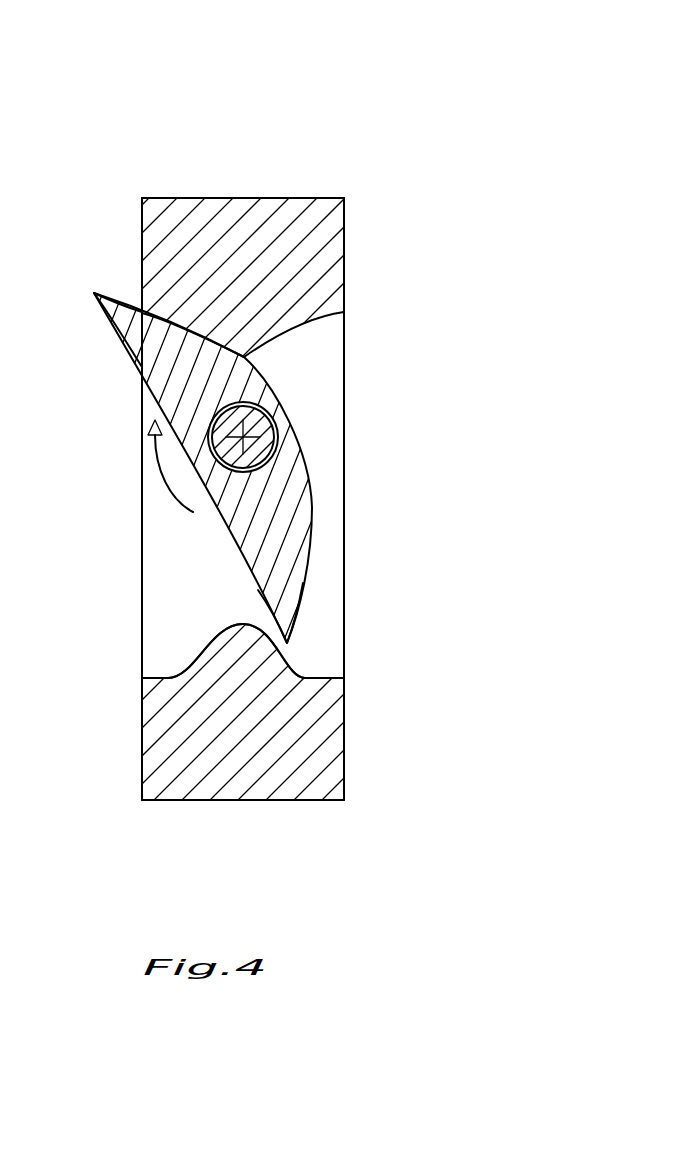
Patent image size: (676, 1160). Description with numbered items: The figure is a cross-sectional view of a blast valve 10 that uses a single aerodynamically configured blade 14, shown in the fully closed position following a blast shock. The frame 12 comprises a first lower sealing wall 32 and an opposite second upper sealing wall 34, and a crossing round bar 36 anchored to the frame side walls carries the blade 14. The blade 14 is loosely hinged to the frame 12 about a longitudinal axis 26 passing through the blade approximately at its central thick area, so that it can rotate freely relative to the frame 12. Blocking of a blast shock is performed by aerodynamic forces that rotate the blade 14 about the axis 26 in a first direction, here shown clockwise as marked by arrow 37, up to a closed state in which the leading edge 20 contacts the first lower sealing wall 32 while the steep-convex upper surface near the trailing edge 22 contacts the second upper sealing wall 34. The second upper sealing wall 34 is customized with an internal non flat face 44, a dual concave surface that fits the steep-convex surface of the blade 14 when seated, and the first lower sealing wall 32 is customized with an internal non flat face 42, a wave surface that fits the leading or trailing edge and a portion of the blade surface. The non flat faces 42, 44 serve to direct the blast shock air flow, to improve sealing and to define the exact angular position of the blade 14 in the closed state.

The blast valve 10 is at (470, 60).
The frame 12 is at (240, 200).
The blade 14 is at (312, 535).
The leading edge 20 is at (287, 642).
The trailing edge 22 is at (94, 293).
The longitudinal axis 26 is at (256, 437).
The first lower sealing wall 32 is at (143, 687).
The second upper sealing wall 34 is at (343, 272).
The round bar 36 is at (262, 406).
The arrow 37 is at (157, 472).
The non flat face 42 is at (227, 630).
The non flat face 44 is at (293, 325).